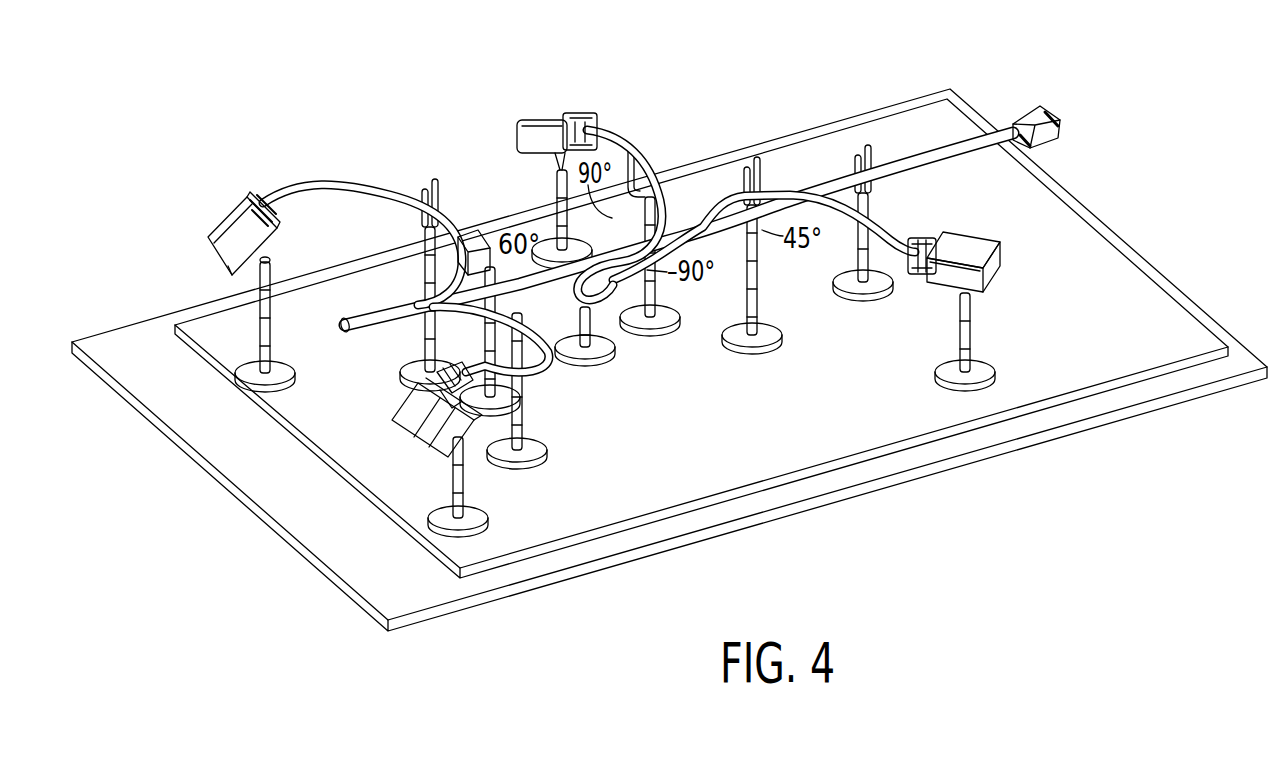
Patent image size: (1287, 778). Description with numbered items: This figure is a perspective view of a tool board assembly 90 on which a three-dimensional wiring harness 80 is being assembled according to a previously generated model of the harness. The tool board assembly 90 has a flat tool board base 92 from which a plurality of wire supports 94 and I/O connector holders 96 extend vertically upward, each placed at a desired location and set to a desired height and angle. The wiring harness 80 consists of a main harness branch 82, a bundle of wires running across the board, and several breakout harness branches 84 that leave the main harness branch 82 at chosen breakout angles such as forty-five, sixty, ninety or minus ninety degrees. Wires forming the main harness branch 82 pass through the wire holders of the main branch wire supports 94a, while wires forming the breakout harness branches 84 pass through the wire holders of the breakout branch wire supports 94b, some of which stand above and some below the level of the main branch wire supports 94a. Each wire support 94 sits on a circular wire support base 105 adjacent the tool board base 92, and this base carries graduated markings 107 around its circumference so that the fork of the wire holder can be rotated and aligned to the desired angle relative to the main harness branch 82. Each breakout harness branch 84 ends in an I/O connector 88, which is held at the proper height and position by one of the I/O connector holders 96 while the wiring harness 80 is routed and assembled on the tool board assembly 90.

The wiring harness 80 is at (1027, 110).
The main harness branch 82 is at (938, 130).
The breakout harness branch 84 is at (566, 242).
The I/O connector 88 is at (546, 113).
The tool board assembly 90 is at (1139, 442).
The tool board base 92 is at (1173, 335).
The wire support 94 is at (594, 304).
The main branch wire support 94a is at (435, 343).
The breakout branch wire support 94b is at (399, 289).
The I/O connector holder 96 is at (988, 316).
The wire support base 105 is at (499, 514).
The graduated markings 107 is at (541, 433).